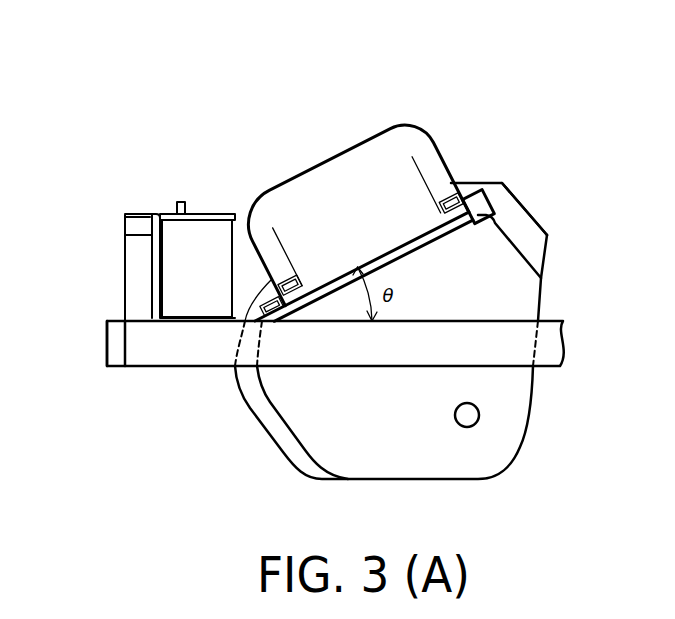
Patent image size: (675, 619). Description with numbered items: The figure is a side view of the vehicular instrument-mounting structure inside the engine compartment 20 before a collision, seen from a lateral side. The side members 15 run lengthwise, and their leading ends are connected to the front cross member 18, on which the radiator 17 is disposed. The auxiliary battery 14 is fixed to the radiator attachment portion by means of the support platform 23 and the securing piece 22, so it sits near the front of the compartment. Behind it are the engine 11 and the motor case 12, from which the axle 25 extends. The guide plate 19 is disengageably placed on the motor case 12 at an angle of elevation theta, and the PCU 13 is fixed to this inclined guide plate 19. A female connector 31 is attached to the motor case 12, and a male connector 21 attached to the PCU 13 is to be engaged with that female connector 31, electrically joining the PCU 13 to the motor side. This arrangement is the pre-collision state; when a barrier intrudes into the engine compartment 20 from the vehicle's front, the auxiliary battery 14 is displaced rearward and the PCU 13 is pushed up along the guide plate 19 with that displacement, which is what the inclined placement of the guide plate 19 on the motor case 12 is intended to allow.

The engine 11 is at (550, 232).
The motor case 12 is at (544, 302).
The PCU 13 is at (344, 152).
The auxiliary battery 14 is at (232, 253).
The side member 15 is at (203, 366).
The radiator 17 is at (125, 268).
The front cross member 18 is at (107, 331).
The guide plate 19 is at (487, 205).
The engine compartment 20 is at (280, 100).
The male connector 21 is at (473, 190).
The securing piece 22 is at (210, 214).
The support platform 23 is at (137, 213).
The axle 25 is at (480, 415).
The female connector 31 is at (540, 222).